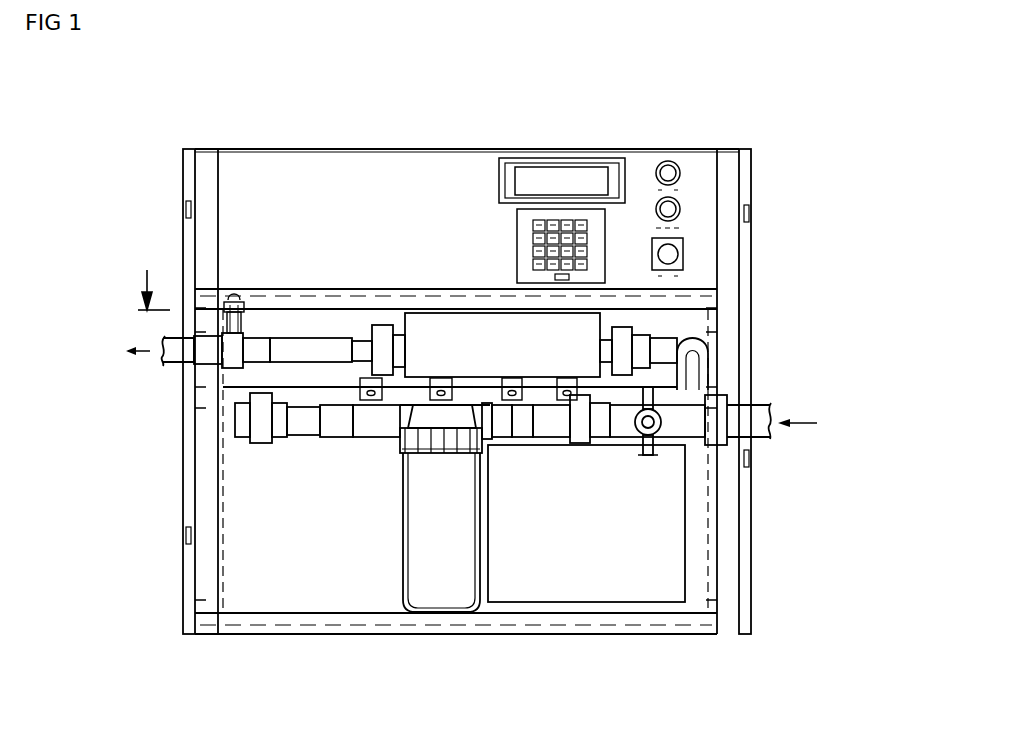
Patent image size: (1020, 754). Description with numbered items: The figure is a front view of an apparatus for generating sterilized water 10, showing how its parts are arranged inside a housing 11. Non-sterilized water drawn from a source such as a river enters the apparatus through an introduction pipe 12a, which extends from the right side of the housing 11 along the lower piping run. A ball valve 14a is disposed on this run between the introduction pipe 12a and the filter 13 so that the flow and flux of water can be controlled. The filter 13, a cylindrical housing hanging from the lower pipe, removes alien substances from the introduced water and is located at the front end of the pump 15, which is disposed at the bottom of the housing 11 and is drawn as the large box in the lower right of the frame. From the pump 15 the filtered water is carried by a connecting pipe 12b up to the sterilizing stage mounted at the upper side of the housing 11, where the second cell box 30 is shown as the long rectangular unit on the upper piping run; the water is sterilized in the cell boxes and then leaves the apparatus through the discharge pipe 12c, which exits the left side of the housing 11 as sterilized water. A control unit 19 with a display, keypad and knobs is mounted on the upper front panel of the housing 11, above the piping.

The apparatus for generating sterilized water 10 is at (782, 181).
The housing 11 is at (183, 580).
The introduction pipe 12a is at (758, 413).
The connecting pipe 12b is at (680, 336).
The discharge pipe 12c is at (178, 365).
The filter 13 is at (415, 553).
The ball valve 14a is at (657, 452).
The pump 15 is at (605, 583).
The control panel 19 is at (448, 168).
The second cell box 30 is at (427, 328).